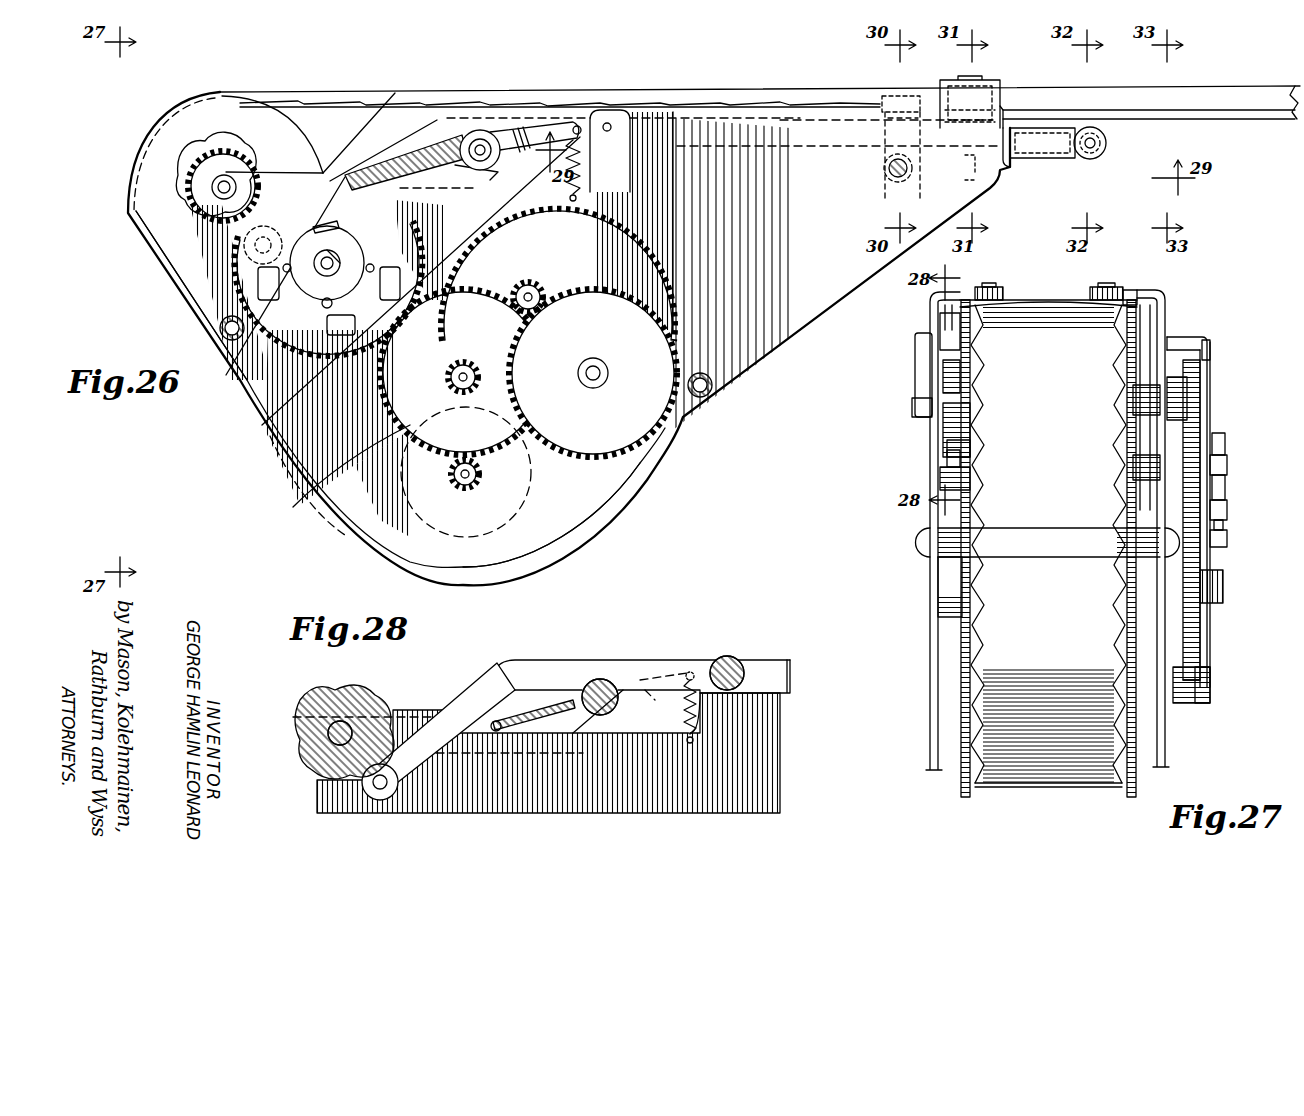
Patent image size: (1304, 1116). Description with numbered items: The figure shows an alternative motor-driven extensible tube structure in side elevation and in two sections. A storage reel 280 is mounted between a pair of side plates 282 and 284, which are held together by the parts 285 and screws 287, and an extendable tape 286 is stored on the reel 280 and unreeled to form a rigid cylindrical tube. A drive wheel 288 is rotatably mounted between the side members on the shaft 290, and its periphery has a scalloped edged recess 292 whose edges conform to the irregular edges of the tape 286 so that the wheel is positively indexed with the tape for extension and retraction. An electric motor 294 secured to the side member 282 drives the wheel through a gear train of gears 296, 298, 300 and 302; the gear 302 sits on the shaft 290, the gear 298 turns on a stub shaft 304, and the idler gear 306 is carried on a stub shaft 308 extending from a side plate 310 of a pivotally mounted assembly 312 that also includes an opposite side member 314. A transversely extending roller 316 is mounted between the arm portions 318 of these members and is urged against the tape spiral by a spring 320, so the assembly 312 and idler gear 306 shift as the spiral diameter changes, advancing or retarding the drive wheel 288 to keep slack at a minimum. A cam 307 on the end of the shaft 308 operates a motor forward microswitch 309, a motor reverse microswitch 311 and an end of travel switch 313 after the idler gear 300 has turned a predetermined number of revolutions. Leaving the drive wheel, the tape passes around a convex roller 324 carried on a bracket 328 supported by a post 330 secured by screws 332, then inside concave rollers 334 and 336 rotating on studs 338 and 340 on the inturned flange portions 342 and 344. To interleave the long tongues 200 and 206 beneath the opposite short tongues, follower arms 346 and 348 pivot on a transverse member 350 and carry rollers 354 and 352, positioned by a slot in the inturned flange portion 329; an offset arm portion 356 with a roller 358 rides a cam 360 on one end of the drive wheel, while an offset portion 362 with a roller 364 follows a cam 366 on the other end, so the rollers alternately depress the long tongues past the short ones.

In FIG. 26, the long tongue 200 is at (684, 117).
In FIG. 27, the long tongue 200 is at (1115, 614).
In FIG. 27, the long tongue 206 is at (980, 630).
In FIG. 26, the storage reel 280 is at (675, 470).
In FIG. 27, the storage reel 280 is at (955, 793).
In FIG. 28, the storage reel 280 is at (601, 827).
In FIG. 26, the side plate 282 is at (770, 356).
In FIG. 27, the side plate 282 is at (1174, 768).
In FIG. 27, the side plate 284 is at (930, 695).
In FIG. 28, the side plate 284 is at (487, 805).
In FIG. 26, the parts 285 is at (232, 344).
In FIG. 27, the parts 285 is at (940, 561).
In FIG. 26, the extendable tape 286 is at (196, 333).
In FIG. 27, the extendable tape 286 is at (1035, 784).
In FIG. 26, the screws 287 is at (224, 341).
In FIG. 27, the screws 287 is at (915, 540).
In FIG. 26, the drive wheel 288 is at (150, 225).
In FIG. 27, the drive wheel 288 is at (950, 446).
In FIG. 26, the shaft 290 is at (213, 187).
In FIG. 27, the shaft 290 is at (950, 423).
In FIG. 28, the shaft 290 is at (300, 726).
In FIG. 27, the scalloped edged recess 292 is at (1118, 355).
In FIG. 26, the electric motor 294 is at (462, 570).
In FIG. 27, the electric motor 294 is at (1147, 792).
In FIG. 26, the gear 296 is at (450, 492).
In FIG. 27, the gear 296 is at (1212, 693).
In FIG. 26, the gear 298 is at (305, 497).
In FIG. 27, the gear 298 is at (1205, 645).
In FIG. 26, the idler gear 300 is at (250, 372).
In FIG. 27, the idler gear 300 is at (1228, 465).
In FIG. 26, the gear 302 is at (192, 198).
In FIG. 27, the gear 302 is at (1208, 378).
In FIG. 26, the stub shaft 304 is at (452, 381).
In FIG. 27, the stub shaft 304 is at (1225, 585).
In FIG. 26, the idler gear 306 is at (484, 470).
In FIG. 27, the idler gear 306 is at (1212, 681).
In FIG. 26, the cam 307 is at (340, 256).
In FIG. 27, the cam 307 is at (1228, 445).
In FIG. 26, the stub shaft 308 is at (318, 235).
In FIG. 27, the stub shaft 308 is at (1228, 487).
In FIG. 26, the motor forward microswitch 309 is at (392, 270).
In FIG. 26, the side plate 310 is at (452, 218).
In FIG. 27, the side plate 310 is at (1205, 420).
In FIG. 26, the motor reverse microswitch 311 is at (267, 280).
In FIG. 27, the motor reverse microswitch 311 is at (1253, 510).
In FIG. 26, the pivotally mounted assembly 312 is at (426, 149).
In FIG. 27, the pivotally mounted assembly 312 is at (1212, 338).
In FIG. 28, the pivotally mounted assembly 312 is at (542, 699).
In FIG. 26, the end of travel switch 313 is at (330, 326).
In FIG. 27, the end of travel switch 313 is at (1228, 537).
In FIG. 27, the side member 314 is at (916, 400).
In FIG. 28, the side member 314 is at (494, 720).
In FIG. 26, the roller 316 is at (483, 128).
In FIG. 27, the roller 316 is at (918, 346).
In FIG. 28, the roller 316 is at (598, 684).
In FIG. 26, the arm portion 318 is at (510, 125).
In FIG. 27, the arm portion 318 is at (1212, 346).
In FIG. 26, the spring 320 is at (585, 178).
In FIG. 28, the spring 320 is at (681, 716).
In FIG. 26, the convex roller 324 is at (888, 95).
In FIG. 26, the bracket 328 is at (876, 158).
In FIG. 26, the inturned flange portion 329 is at (1002, 186).
In FIG. 26, the post 330 is at (886, 182).
In FIG. 26, the screws 332 is at (892, 183).
In FIG. 27, the concave roller 334 is at (932, 300).
In FIG. 26, the concave roller 336 is at (1003, 106).
In FIG. 27, the concave roller 336 is at (1128, 300).
In FIG. 27, the stud 338 is at (992, 280).
In FIG. 26, the stud 340 is at (962, 80).
In FIG. 27, the stud 340 is at (1103, 287).
In FIG. 27, the inturned flange portion 342 is at (1000, 290).
In FIG. 26, the inturned flange portion 344 is at (990, 95).
In FIG. 27, the inturned flange portion 344 is at (1090, 300).
In FIG. 26, the follower arm 346 is at (1040, 165).
In FIG. 28, the follower arm 346 is at (792, 676).
In FIG. 26, the follower arm 348 is at (1035, 162).
In FIG. 26, the transverse member 350 is at (610, 124).
In FIG. 27, the transverse member 350 is at (940, 322).
In FIG. 28, the transverse member 350 is at (722, 664).
In FIG. 26, the roller 352 is at (1102, 146).
In FIG. 26, the roller 354 is at (1086, 160).
In FIG. 26, the offset arm portion 356 is at (340, 152).
In FIG. 27, the offset arm portion 356 is at (1138, 478).
In FIG. 26, the roller 358 is at (245, 283).
In FIG. 27, the roller 358 is at (1134, 463).
In FIG. 26, the cam 360 is at (182, 156).
In FIG. 27, the cam 360 is at (1175, 346).
In FIG. 26, the offset portion 362 is at (360, 113).
In FIG. 27, the offset portion 362 is at (952, 461).
In FIG. 28, the offset portion 362 is at (461, 690).
In FIG. 27, the roller 364 is at (950, 477).
In FIG. 28, the roller 364 is at (380, 801).
In FIG. 27, the cam 366 is at (950, 372).
In FIG. 28, the cam 366 is at (345, 694).